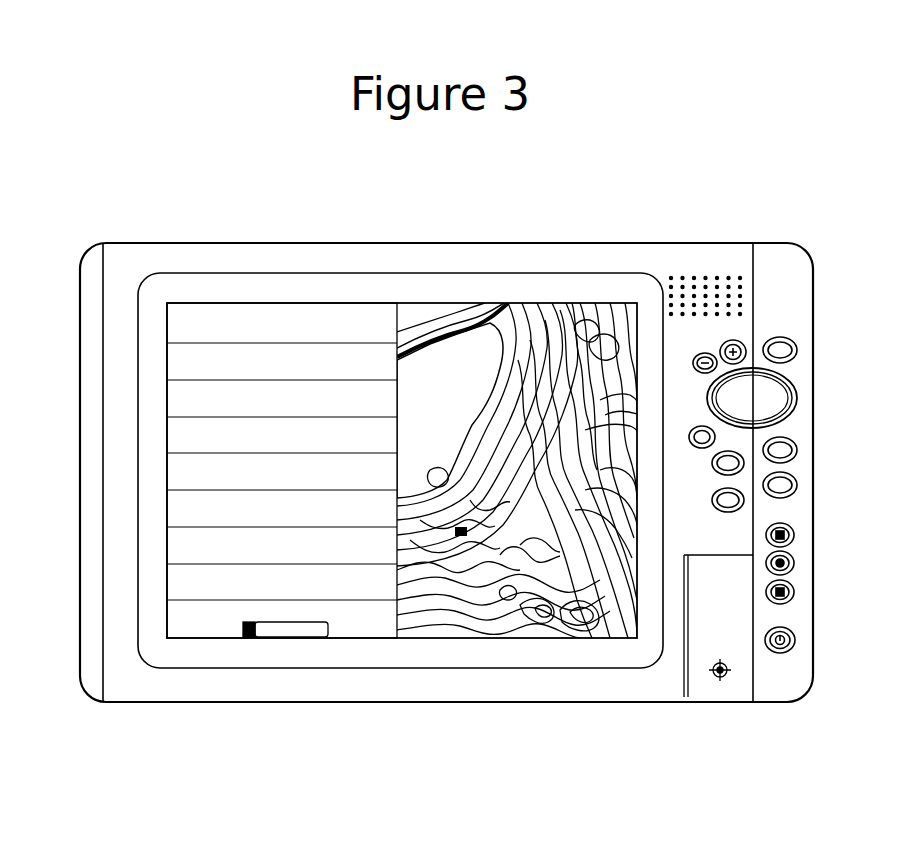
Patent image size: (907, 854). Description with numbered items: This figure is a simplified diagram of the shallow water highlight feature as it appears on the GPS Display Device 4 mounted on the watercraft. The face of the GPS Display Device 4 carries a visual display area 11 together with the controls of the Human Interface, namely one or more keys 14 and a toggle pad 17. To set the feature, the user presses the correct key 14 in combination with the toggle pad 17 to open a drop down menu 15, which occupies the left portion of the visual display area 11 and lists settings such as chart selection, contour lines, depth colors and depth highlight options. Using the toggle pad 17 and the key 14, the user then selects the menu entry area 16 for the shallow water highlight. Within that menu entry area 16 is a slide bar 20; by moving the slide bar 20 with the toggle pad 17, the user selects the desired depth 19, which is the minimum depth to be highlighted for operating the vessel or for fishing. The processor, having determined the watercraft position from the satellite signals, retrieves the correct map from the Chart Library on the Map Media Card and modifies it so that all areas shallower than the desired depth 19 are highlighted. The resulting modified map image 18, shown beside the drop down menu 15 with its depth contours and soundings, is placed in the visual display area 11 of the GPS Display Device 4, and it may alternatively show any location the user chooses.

The GPS Display Device 4 is at (480, 702).
The visual display area 11 is at (435, 305).
The key 14 is at (702, 437).
The drop down menu 15 is at (360, 302).
The menu entry area 16 is at (197, 623).
The toggle pad 17 is at (752, 398).
The modified map image 18 is at (548, 460).
The desired depth 19 is at (380, 622).
The slide bar 20 is at (293, 625).